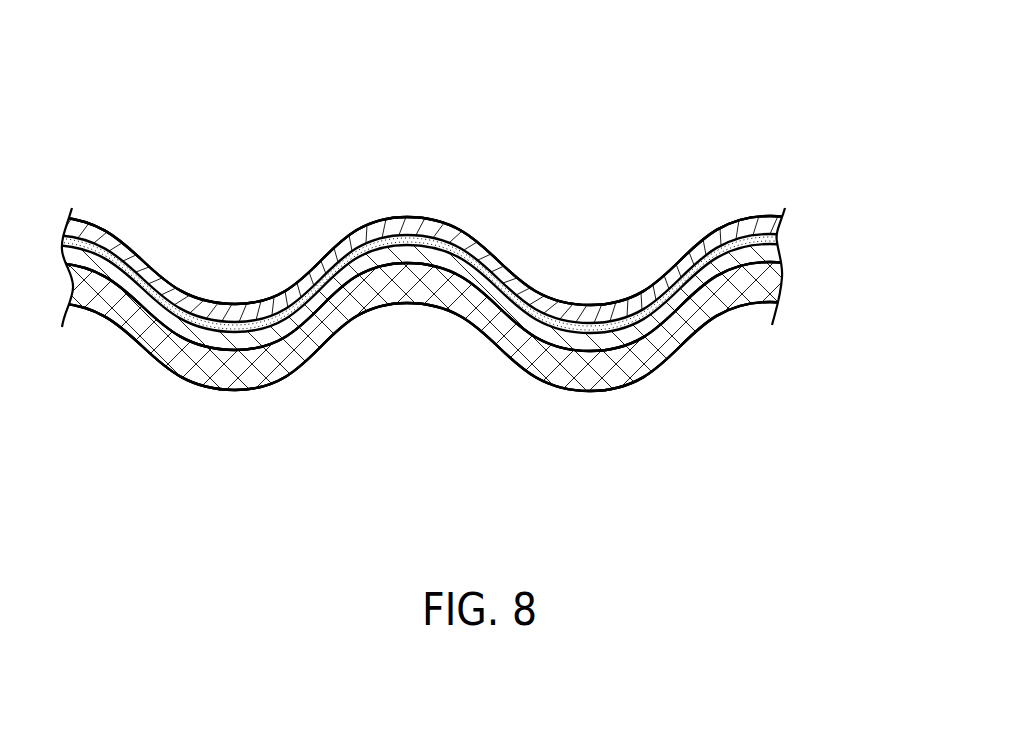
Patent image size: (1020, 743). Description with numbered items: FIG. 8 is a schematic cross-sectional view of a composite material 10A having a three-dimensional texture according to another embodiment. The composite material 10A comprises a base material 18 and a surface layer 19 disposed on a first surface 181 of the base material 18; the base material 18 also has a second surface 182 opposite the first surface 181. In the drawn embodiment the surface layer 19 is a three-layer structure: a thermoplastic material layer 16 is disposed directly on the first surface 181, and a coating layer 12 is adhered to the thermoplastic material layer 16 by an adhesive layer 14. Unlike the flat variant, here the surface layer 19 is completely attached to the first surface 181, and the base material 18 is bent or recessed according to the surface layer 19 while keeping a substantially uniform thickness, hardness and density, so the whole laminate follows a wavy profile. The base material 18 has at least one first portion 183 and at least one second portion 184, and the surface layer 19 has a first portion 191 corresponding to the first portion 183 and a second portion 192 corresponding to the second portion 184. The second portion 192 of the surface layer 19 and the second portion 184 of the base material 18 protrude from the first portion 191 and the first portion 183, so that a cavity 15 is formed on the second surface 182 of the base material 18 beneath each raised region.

The composite material having a three-dimensional texture 10A is at (766, 110).
The surface layer 19 is at (840, 186).
The coating layer 12 is at (772, 224).
The adhesive layer 14 is at (762, 238).
The thermoplastic material layer 16 is at (765, 253).
The base material 18 is at (762, 280).
The first surface 181 is at (703, 280).
The second surface 182 is at (720, 318).
The first portion 183 is at (592, 377).
The second portion 184 is at (394, 288).
The first portion 191 is at (584, 282).
The second portion 192 is at (419, 188).
The cavity 15 is at (422, 348).